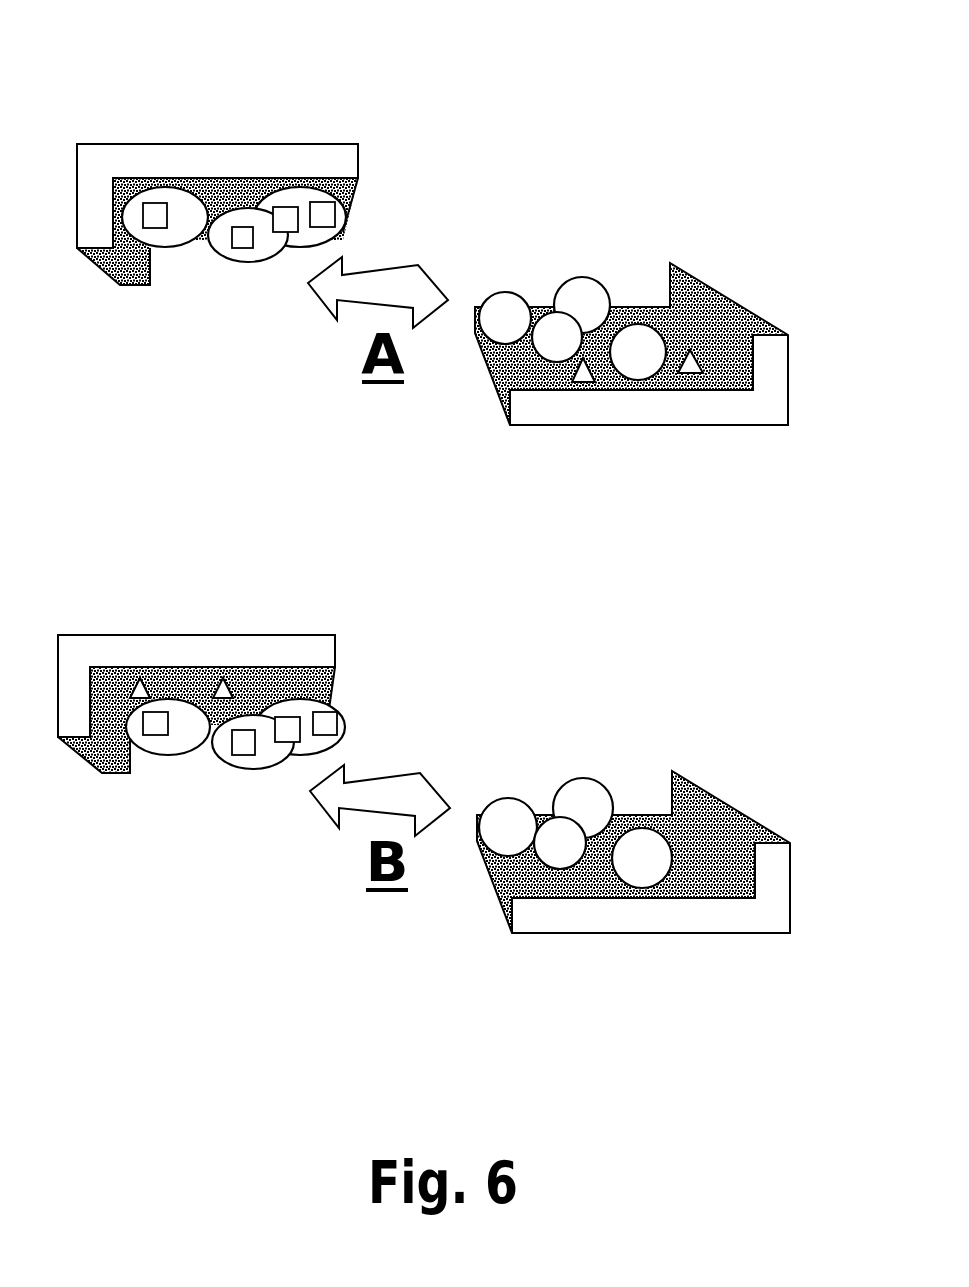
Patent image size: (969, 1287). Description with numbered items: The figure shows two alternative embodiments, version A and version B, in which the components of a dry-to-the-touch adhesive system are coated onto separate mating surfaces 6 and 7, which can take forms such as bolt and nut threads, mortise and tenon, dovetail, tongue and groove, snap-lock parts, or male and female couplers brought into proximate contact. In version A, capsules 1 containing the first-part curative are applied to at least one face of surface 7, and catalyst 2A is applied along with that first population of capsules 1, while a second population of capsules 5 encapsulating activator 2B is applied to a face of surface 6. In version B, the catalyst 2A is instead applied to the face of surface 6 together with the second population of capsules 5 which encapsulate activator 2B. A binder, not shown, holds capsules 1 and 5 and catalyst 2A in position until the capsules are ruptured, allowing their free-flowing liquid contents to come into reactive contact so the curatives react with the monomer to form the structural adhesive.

The capsules 1 is at (587, 290).
The catalyst 2A is at (570, 390).
The activator 2B is at (238, 242).
The second population of capsules 5 is at (262, 255).
The surface 6 is at (153, 158).
The surface 7 is at (718, 413).